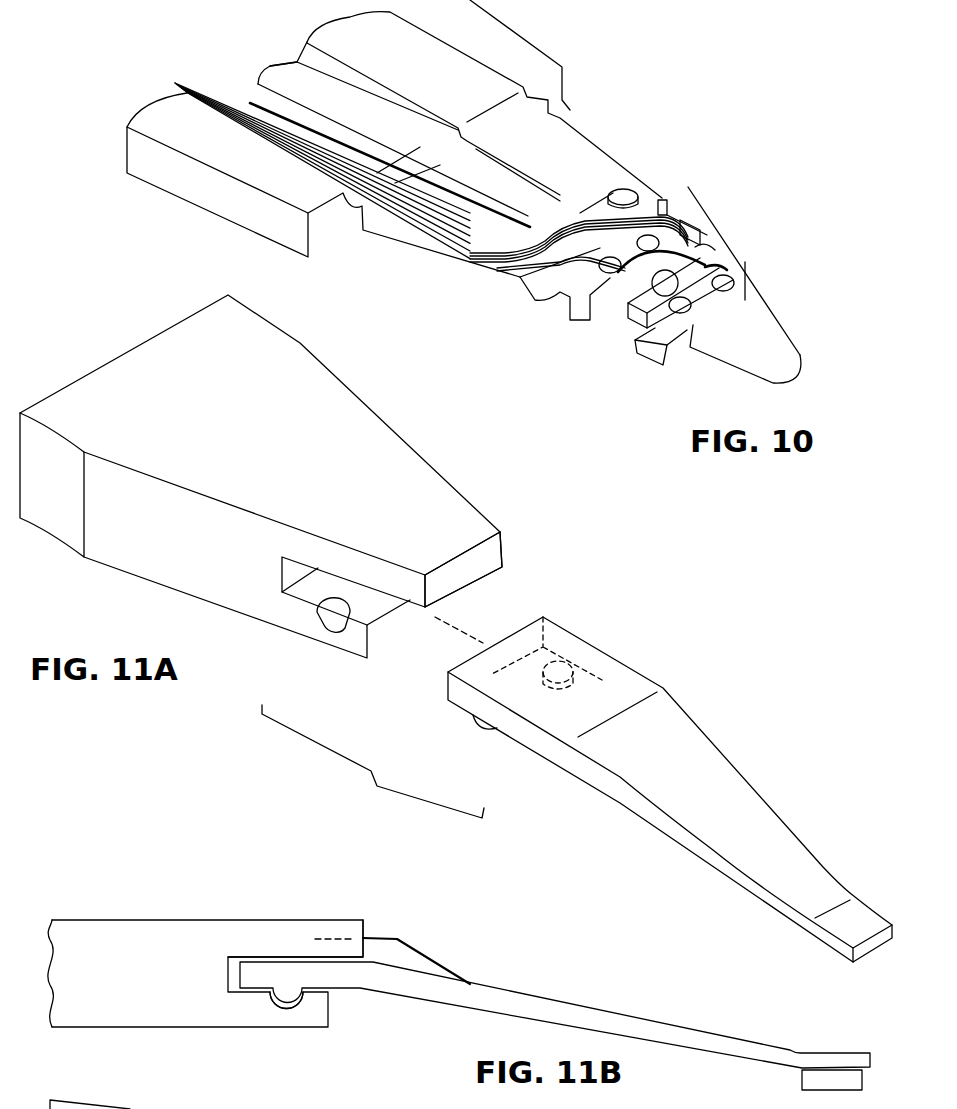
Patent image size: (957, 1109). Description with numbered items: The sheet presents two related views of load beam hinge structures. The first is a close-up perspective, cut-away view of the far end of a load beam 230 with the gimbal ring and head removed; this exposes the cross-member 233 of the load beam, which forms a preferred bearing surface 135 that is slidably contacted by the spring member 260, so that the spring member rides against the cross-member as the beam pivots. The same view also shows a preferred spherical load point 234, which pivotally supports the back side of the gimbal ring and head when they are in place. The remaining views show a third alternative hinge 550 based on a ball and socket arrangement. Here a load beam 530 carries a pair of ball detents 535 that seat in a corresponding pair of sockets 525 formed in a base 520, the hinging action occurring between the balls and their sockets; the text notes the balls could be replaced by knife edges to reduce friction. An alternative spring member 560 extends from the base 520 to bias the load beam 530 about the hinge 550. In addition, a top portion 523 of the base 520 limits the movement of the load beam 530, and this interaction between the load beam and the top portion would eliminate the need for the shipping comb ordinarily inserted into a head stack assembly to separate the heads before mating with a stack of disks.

In FIG. 10, the bearing surface 135 is at (633, 320).
In FIG. 10, the load beam 230 is at (620, 117).
In FIG. 10, the cross-member 233 is at (693, 280).
In FIG. 10, the spherical load point 234 is at (677, 270).
In FIG. 10, the spring member 260 is at (421, 126).
In FIG. 11A, the base 520 is at (368, 432).
In FIG. 11B, the base 520 is at (167, 920).
In FIG. 11A, the top portion 523 is at (477, 509).
In FIG. 11B, the top portion 523 is at (365, 930).
In FIG. 11A, the sockets 525 is at (332, 618).
In FIG. 11A, the load beam 530 is at (715, 767).
In FIG. 11B, the load beam 530 is at (555, 1026).
In FIG. 11A, the ball detents 535 is at (483, 727).
In FIG. 11A, the hinge 550 is at (373, 761).
In FIG. 11B, the hinge 550 is at (263, 1009).
In FIG. 11B, the spring member 560 is at (430, 958).